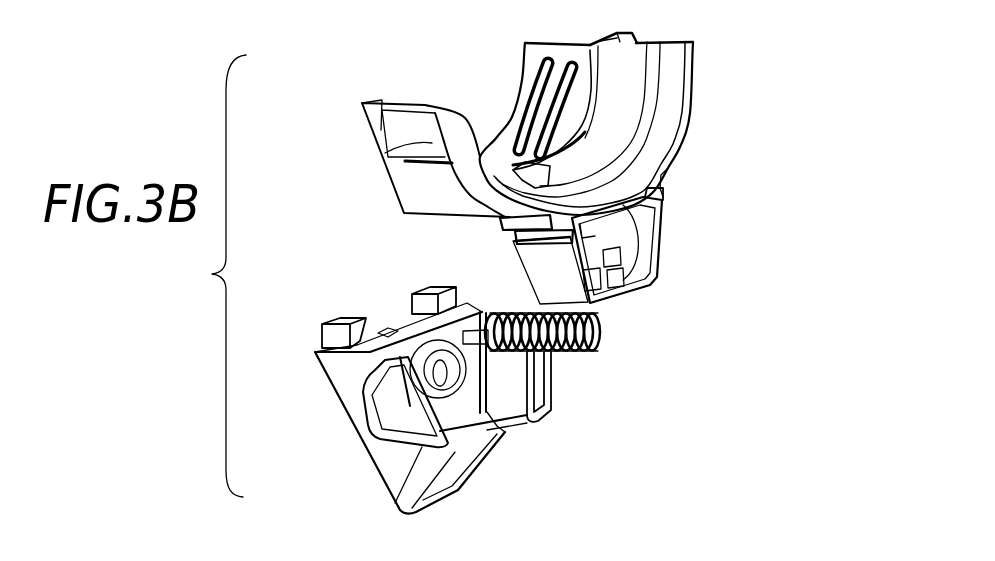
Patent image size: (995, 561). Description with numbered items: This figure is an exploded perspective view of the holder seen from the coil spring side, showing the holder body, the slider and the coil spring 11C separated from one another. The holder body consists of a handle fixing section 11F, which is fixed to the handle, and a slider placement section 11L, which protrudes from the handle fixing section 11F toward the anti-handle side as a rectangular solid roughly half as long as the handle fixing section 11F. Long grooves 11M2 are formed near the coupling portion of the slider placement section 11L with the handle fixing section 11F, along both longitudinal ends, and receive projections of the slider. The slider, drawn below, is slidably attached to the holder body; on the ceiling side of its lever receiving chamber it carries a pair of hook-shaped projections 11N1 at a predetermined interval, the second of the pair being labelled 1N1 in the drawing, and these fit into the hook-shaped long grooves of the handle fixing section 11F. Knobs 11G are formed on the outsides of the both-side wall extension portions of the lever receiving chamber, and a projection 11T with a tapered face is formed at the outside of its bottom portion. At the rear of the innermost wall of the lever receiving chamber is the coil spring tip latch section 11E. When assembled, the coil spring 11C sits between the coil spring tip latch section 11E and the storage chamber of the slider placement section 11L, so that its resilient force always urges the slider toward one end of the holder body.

The projection with a tapered face 11T is at (515, 22).
The handle fixing section 11F is at (688, 57).
The knobs 11G is at (386, 128).
The long grooves 11M2 is at (663, 196).
The slider placement section 11L is at (650, 286).
The coil spring 11C is at (600, 343).
The coil spring tip latch section 11E is at (445, 372).
The hook-shaped projections 11N1 is at (425, 290).
The positioning projection 1N1 is at (337, 322).